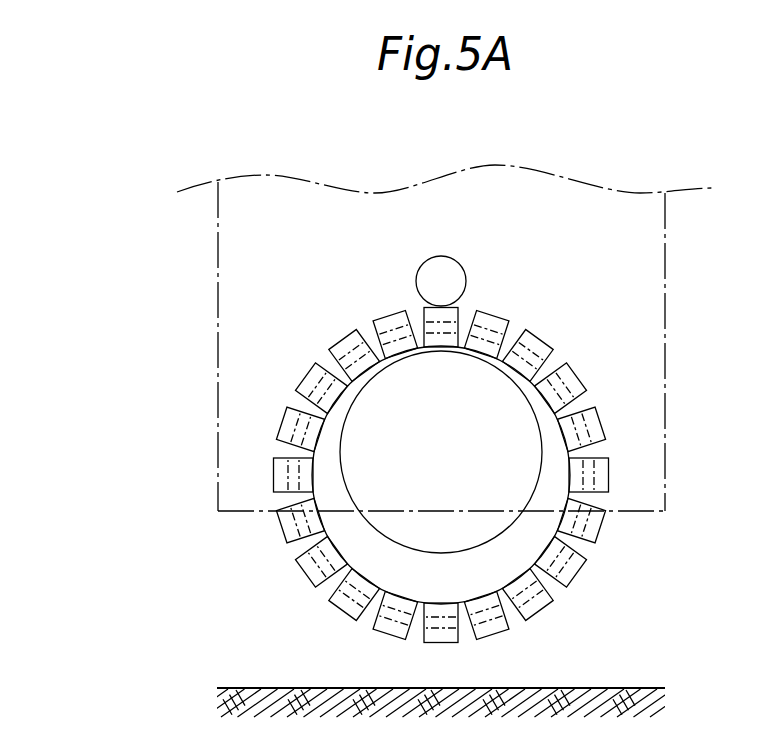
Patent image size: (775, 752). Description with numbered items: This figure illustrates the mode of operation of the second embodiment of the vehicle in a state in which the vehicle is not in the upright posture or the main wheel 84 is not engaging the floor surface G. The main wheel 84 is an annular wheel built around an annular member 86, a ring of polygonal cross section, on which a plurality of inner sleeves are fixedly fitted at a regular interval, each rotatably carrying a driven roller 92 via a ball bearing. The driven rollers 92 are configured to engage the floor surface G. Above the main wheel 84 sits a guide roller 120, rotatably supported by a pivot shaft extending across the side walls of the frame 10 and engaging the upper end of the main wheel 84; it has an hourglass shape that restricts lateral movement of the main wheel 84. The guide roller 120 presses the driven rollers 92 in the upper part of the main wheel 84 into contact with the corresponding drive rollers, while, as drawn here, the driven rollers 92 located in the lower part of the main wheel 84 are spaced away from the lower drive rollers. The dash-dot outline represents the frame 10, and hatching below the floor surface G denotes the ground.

The frame 10 is at (660, 260).
The main wheel 84 is at (454, 450).
The annular member 86 is at (513, 337).
The driven roller 92 is at (583, 393).
The guide roller 120 is at (442, 258).
The floor surface G is at (609, 688).